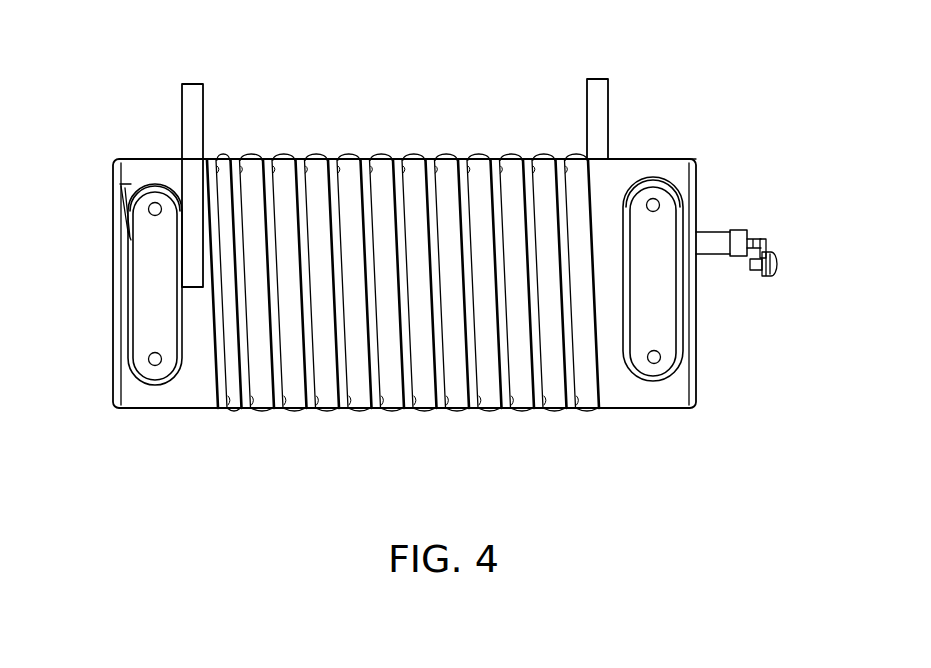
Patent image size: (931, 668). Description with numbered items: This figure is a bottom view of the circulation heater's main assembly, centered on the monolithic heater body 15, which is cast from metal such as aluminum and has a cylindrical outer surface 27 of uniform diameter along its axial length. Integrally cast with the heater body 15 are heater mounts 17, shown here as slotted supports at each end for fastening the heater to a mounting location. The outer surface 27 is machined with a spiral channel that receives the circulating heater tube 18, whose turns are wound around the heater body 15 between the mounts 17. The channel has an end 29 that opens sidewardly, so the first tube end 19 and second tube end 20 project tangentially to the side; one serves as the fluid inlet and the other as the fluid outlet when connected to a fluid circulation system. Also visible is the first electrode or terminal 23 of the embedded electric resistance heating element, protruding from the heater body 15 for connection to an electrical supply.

The heater body 15 is at (632, 390).
The heater mounts 17 is at (163, 372).
The circulating heater tube 18 is at (356, 141).
The first tube end 19 is at (607, 89).
The second tube end 20 is at (192, 107).
The first electrode or terminal 23 is at (730, 237).
The cylindrical outer surface 27 is at (618, 163).
The channel end 29 is at (188, 248).